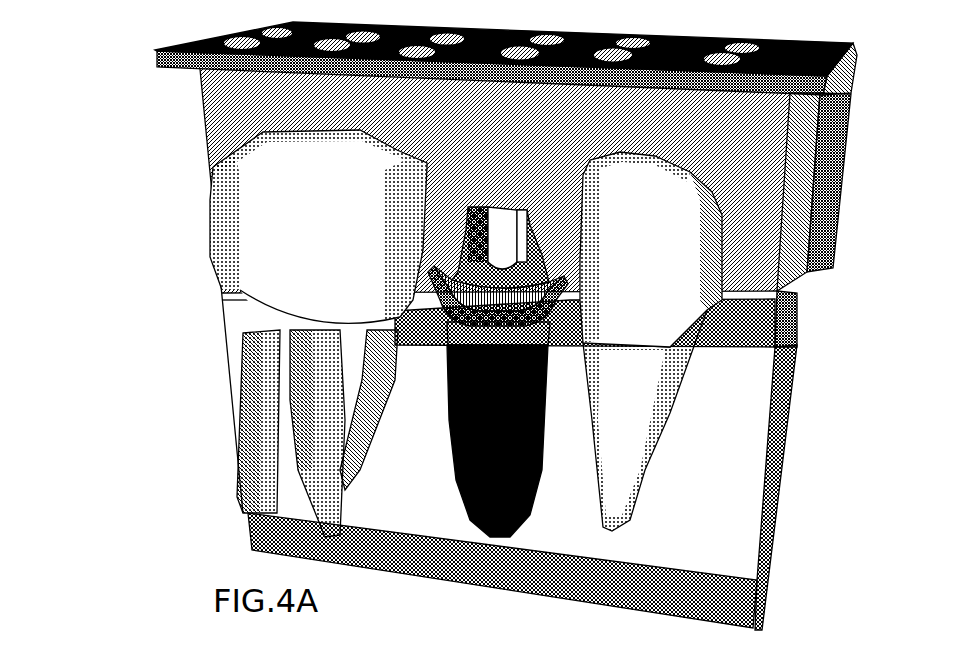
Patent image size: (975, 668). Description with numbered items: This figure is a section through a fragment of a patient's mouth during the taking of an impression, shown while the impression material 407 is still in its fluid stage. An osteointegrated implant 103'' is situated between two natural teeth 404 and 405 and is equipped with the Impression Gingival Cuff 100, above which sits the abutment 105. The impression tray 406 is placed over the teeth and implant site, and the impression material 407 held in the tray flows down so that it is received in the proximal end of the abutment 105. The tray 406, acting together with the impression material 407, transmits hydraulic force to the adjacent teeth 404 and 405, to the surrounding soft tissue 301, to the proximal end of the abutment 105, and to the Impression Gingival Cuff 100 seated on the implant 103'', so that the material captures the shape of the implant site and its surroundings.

The impression tray 406 is at (155, 55).
The impression material 407 is at (250, 107).
The natural tooth 404 is at (247, 249).
The natural tooth 405 is at (637, 408).
The soft tissue 301 is at (753, 312).
The Impression Gingival Cuff 100 is at (434, 265).
The abutment 105 is at (527, 220).
The osteointegrated implant 103'' is at (467, 429).